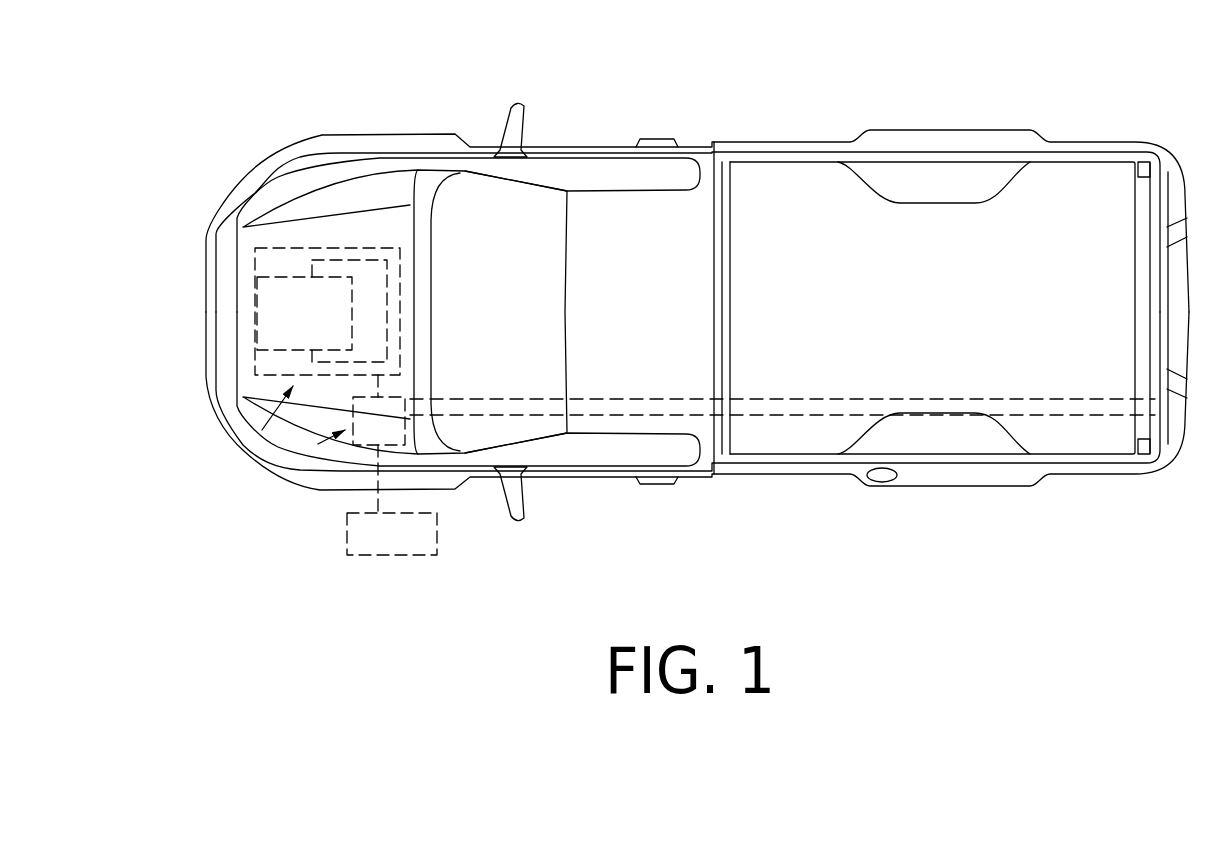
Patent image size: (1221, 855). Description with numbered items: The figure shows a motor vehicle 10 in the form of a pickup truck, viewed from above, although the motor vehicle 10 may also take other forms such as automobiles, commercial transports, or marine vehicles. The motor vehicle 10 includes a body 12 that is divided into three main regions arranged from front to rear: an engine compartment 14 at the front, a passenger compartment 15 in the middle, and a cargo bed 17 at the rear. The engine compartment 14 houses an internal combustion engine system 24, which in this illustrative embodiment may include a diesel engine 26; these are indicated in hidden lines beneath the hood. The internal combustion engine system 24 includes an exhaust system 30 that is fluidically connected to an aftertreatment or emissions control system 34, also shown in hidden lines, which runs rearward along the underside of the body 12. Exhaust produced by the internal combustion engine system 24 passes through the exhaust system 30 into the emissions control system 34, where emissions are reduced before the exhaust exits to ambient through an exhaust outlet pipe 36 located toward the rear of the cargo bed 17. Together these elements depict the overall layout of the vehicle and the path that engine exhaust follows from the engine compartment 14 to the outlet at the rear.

The motor vehicle 10 is at (960, 527).
The body 12 is at (763, 481).
The engine compartment 14 is at (353, 199).
The passenger compartment 15 is at (522, 221).
The cargo bed 17 is at (807, 202).
The internal combustion engine system 24 is at (297, 320).
The diesel engine 26 is at (283, 265).
The exhaust system 30 is at (262, 430).
The emissions control system 34 is at (303, 458).
The exhaust outlet pipe 36 is at (1067, 424).